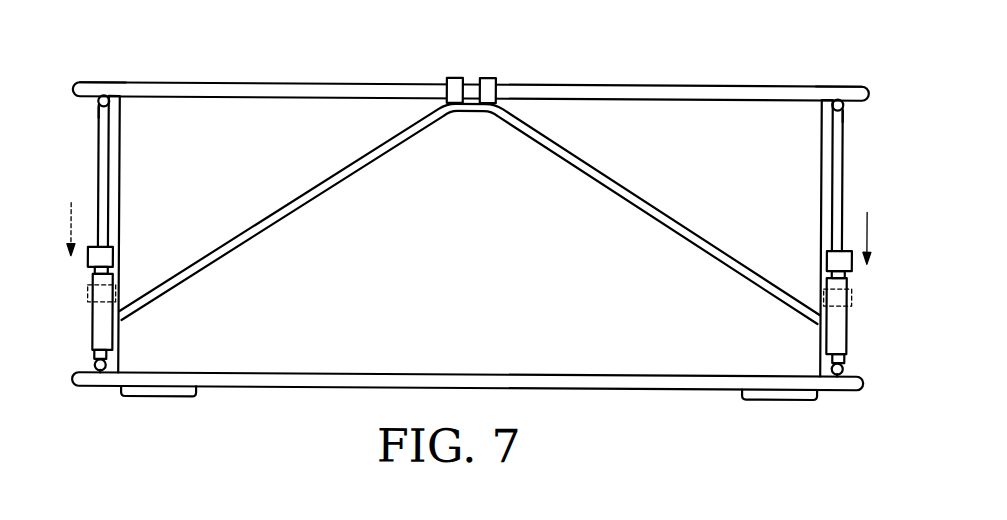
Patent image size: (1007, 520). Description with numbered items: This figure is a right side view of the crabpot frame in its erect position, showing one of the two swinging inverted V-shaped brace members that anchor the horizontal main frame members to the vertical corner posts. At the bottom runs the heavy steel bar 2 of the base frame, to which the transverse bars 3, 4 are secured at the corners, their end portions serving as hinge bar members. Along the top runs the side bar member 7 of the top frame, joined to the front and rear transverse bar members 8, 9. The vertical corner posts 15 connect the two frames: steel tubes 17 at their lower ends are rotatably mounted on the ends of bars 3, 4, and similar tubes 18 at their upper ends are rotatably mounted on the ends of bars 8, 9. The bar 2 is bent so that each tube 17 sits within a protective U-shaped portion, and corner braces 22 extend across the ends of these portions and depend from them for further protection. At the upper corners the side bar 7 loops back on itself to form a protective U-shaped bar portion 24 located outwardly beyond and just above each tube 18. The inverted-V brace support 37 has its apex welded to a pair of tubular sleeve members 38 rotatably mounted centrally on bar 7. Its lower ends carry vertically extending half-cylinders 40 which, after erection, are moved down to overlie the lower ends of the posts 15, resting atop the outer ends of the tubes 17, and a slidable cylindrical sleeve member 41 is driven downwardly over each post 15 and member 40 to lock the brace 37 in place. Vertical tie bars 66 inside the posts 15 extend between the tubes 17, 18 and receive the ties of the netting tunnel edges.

The heavy steel bar 2 is at (473, 373).
The transverse heavy steel bar 3 is at (94, 357).
The transverse heavy steel bar 4 is at (847, 346).
The side bar member 7 is at (394, 93).
The transverse bar member 8 is at (95, 106).
The transverse bar member 9 is at (845, 103).
The corner post 15 is at (100, 170).
The steel tube 17 is at (86, 366).
The tube 18 is at (100, 112).
The corner brace 22 is at (143, 398).
The U-shaped bar portion 24 is at (125, 84).
The inverted-V brace support 37 is at (583, 174).
The tubular sleeve member 38 is at (489, 78).
The half-cylinder 40 is at (98, 320).
The cylindrical sleeve member 41 is at (112, 260).
The vertical tie bar 66 is at (121, 137).